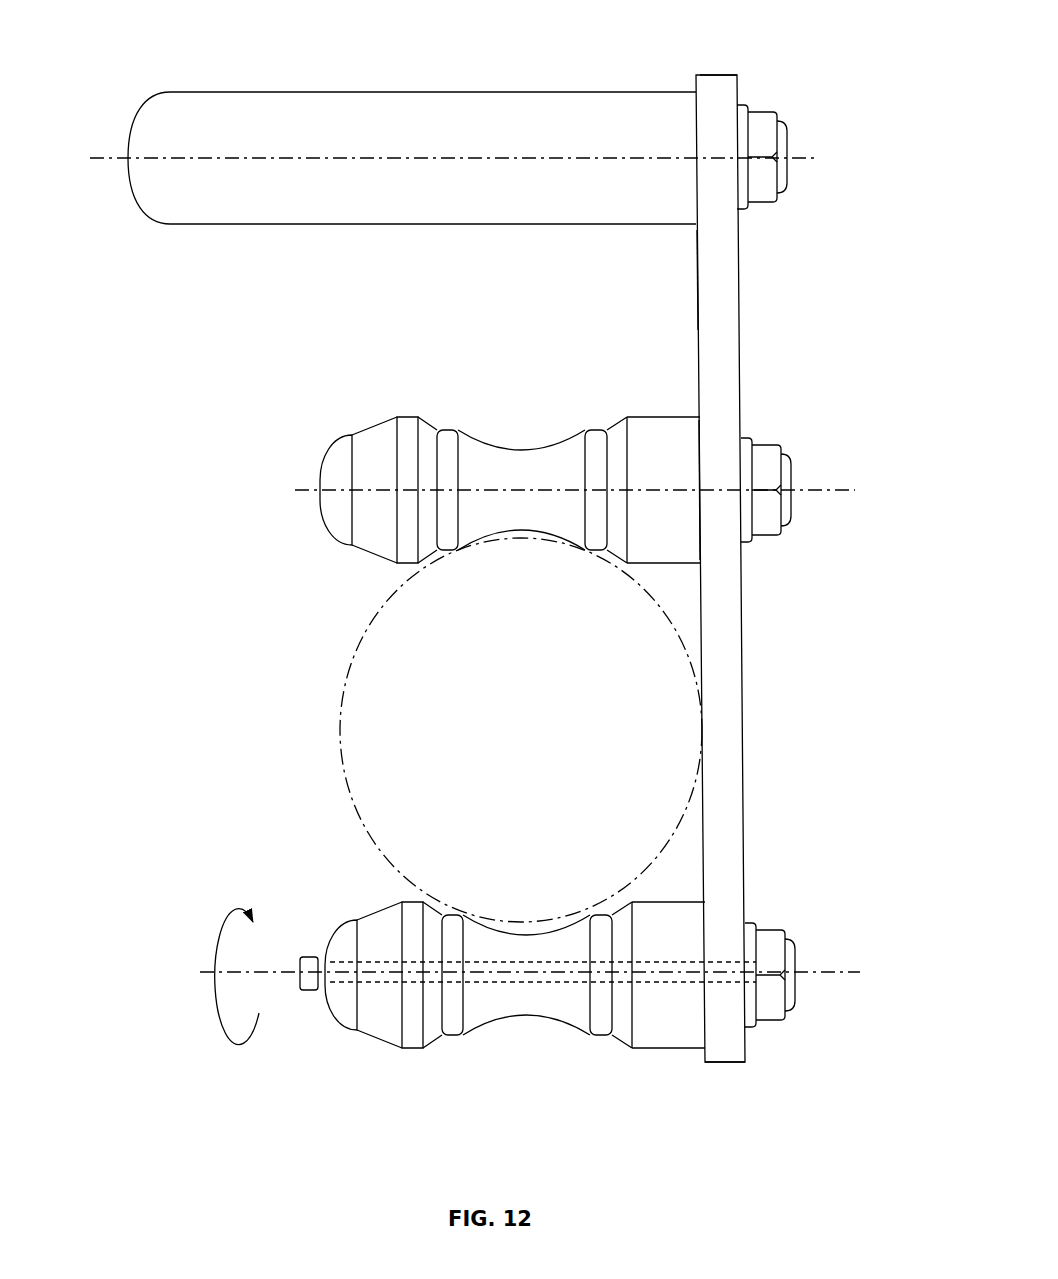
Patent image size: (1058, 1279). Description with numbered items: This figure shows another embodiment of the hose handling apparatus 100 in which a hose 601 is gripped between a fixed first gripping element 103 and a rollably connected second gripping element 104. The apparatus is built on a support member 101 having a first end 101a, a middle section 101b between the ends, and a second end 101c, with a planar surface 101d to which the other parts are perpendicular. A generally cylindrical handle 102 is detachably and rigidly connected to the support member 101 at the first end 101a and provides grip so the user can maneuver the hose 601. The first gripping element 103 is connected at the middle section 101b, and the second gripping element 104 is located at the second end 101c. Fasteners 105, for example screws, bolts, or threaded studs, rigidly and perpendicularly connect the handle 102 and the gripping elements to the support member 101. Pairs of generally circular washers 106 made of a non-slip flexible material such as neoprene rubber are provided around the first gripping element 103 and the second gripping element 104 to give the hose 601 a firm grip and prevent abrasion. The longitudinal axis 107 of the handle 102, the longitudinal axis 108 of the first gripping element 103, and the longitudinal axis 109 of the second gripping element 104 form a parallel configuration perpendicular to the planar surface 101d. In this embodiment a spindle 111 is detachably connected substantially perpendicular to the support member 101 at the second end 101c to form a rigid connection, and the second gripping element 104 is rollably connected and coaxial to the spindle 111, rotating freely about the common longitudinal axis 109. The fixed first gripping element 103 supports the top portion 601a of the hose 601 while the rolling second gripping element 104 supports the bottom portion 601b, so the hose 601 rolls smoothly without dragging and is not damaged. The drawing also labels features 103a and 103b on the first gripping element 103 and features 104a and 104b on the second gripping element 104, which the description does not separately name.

The hose handling apparatus 100 is at (731, 54).
The support member 101 is at (695, 75).
The first end 101a is at (758, 87).
The middle section 101b is at (723, 501).
The second end 101c is at (751, 1068).
The planar surface 101d is at (692, 247).
The handle 102 is at (387, 91).
The first gripping element 103 is at (617, 409).
The upper roller end 103a is at (318, 467).
The upper roller concave surface 103b is at (516, 514).
The second gripping element 104 is at (625, 1055).
The lower roller end 104a is at (323, 935).
The lower roller concave surface 104b is at (522, 935).
The fasteners 105 is at (761, 207).
The washers 106 is at (451, 423).
The longitudinal axis 107 is at (116, 150).
The longitudinal axis 108 is at (297, 494).
The longitudinal axis 109 is at (276, 987).
The spindle 111 is at (297, 959).
The hose 601 is at (343, 767).
The top portion 601a is at (523, 542).
The bottom portion 601b is at (536, 918).